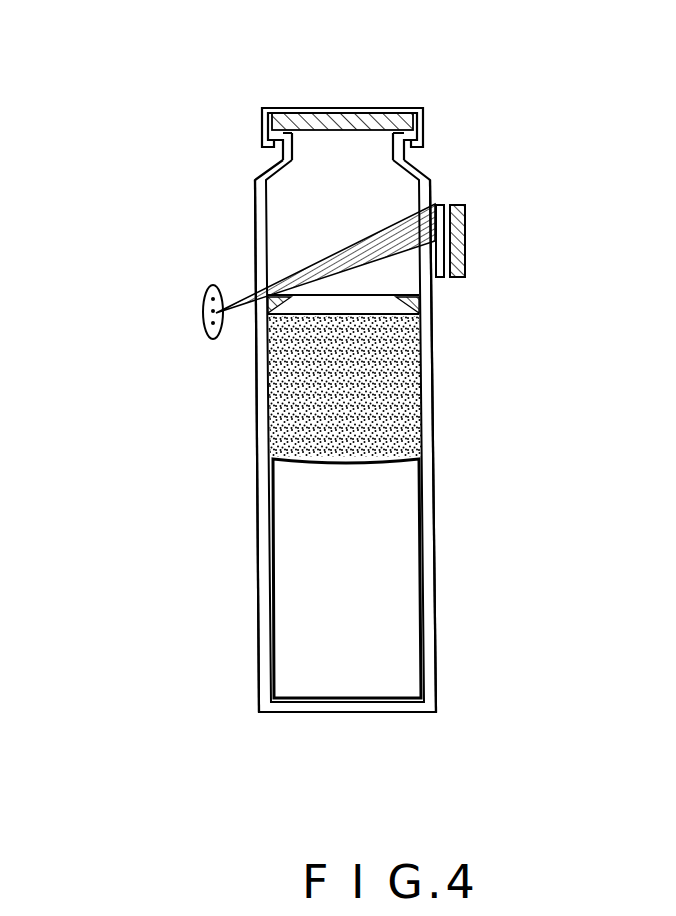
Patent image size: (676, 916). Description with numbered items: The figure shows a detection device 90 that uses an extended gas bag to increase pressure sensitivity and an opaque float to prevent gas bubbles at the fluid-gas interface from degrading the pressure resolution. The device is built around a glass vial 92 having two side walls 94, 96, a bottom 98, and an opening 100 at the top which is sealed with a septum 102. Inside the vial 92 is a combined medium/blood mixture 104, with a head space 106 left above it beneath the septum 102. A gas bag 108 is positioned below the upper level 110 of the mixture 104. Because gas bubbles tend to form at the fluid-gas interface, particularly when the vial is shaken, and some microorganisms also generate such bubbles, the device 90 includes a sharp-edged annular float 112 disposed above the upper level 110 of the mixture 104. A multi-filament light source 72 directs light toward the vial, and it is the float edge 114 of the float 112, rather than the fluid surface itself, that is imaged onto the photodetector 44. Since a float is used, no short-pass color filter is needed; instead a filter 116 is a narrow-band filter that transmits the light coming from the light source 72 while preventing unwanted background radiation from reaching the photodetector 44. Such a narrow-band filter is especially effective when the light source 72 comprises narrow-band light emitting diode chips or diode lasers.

The photodetector 44 is at (458, 277).
The multi-filament light source 72 is at (203, 312).
The detection device 90 is at (166, 190).
The glass vial 92 is at (234, 228).
The side wall 94 is at (258, 571).
The side wall 96 is at (429, 567).
The bottom 98 is at (347, 706).
The opening 100 is at (322, 140).
The septum 102 is at (338, 112).
The combined medium/blood mixture 104 is at (290, 385).
The head space 106 is at (396, 168).
The gas bag 108 is at (407, 482).
The upper level 110 is at (385, 313).
The sharp-edged annular float 112 is at (410, 296).
The float edge 114 is at (268, 283).
The filter 116 is at (438, 205).